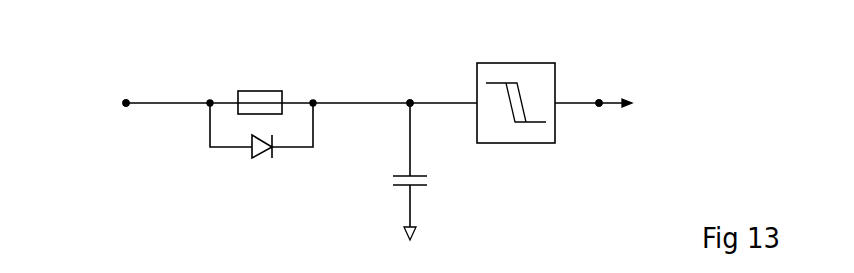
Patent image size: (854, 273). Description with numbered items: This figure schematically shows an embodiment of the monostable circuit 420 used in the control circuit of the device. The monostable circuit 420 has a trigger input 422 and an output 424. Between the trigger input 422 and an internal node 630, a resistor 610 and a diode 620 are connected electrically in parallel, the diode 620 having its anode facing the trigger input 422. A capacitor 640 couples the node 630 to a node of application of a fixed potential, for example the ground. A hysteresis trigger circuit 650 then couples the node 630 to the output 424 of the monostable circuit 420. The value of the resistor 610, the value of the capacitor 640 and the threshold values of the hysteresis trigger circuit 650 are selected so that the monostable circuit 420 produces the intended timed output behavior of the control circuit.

The monostable circuit 420 is at (163, 134).
The trigger input 422 is at (124, 101).
The output 424 is at (600, 100).
The resistor 610 is at (255, 100).
The diode 620 is at (269, 152).
The node 630 is at (410, 100).
The capacitor 640 is at (421, 188).
The hysteresis trigger circuit 650 is at (538, 68).